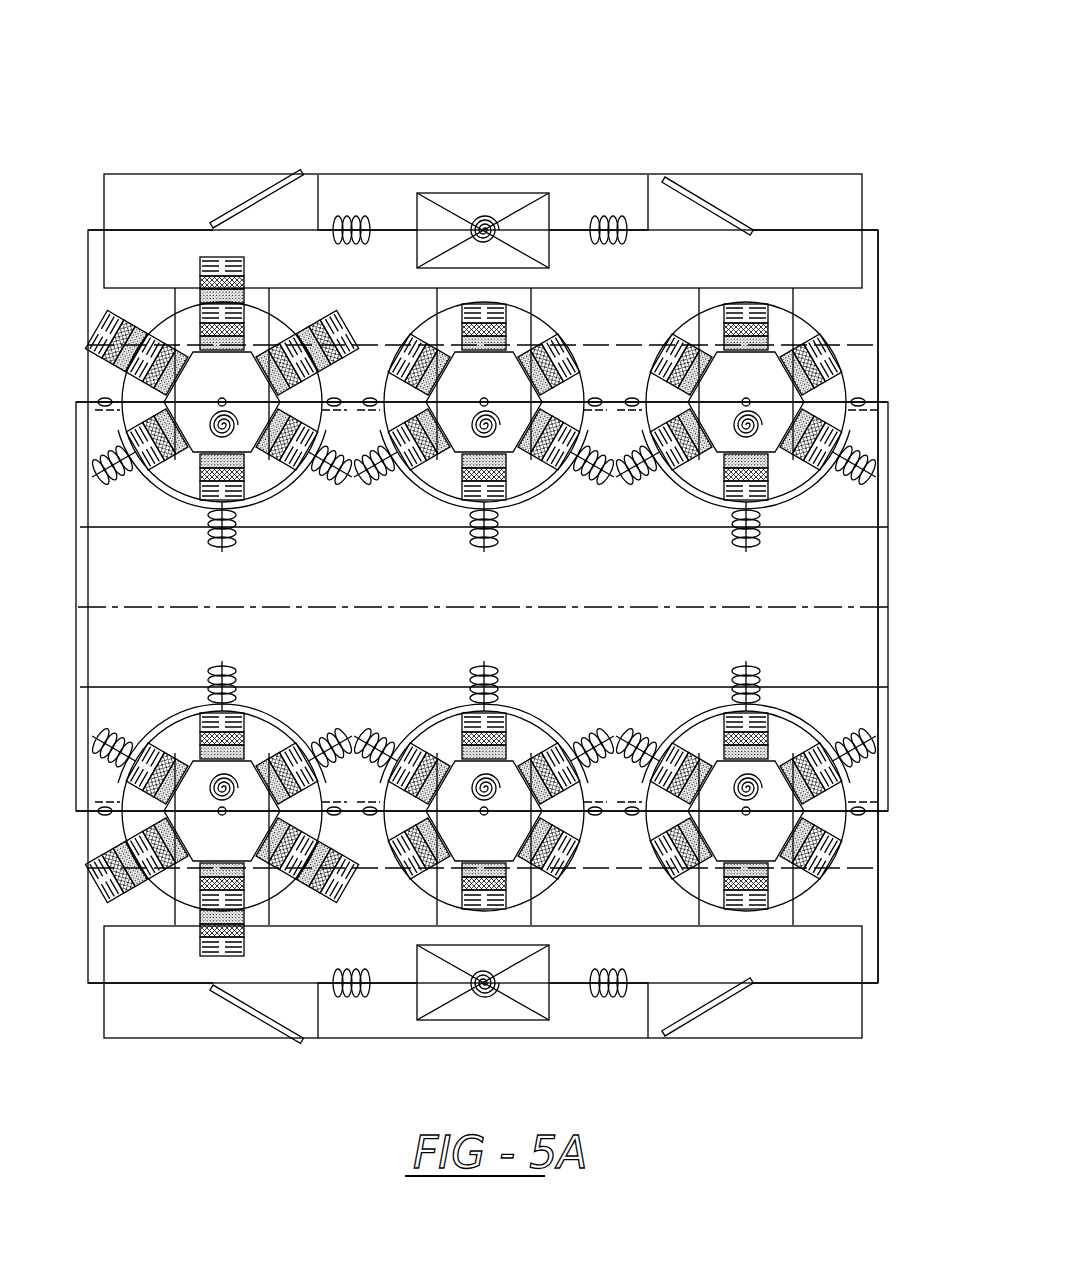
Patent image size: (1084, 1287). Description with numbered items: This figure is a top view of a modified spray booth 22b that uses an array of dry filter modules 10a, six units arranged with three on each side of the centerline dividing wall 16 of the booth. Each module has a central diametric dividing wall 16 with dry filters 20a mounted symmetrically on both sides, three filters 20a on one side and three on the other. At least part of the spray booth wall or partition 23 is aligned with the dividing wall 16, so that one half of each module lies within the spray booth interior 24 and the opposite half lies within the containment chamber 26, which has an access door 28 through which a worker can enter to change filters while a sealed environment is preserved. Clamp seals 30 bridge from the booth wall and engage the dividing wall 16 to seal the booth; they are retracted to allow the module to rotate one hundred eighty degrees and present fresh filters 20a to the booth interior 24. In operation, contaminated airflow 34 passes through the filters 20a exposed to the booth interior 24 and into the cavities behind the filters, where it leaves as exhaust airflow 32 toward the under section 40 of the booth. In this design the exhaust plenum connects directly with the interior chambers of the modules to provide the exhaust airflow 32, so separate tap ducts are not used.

The spray booth 22b is at (527, 128).
The dry filter module 10a is at (158, 306).
The access door 28 is at (253, 204).
The containment chamber 26 is at (808, 270).
The under section 40 is at (852, 655).
The spray booth interior 24 is at (606, 650).
The exhaust airflow 32 is at (210, 424).
The dry filter 20a is at (177, 490).
The contaminated airflow 34 is at (230, 548).
The spray booth wall or partition 23 is at (888, 406).
The clamp seal 30 is at (886, 414).
The central diametric dividing wall 16 is at (835, 392).